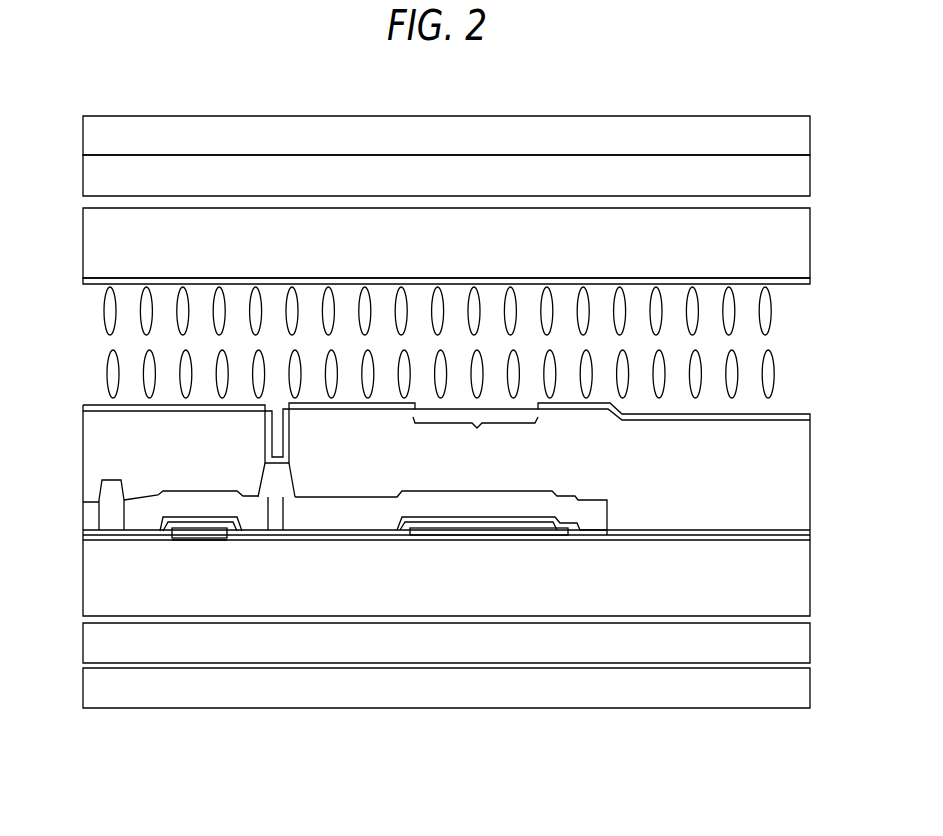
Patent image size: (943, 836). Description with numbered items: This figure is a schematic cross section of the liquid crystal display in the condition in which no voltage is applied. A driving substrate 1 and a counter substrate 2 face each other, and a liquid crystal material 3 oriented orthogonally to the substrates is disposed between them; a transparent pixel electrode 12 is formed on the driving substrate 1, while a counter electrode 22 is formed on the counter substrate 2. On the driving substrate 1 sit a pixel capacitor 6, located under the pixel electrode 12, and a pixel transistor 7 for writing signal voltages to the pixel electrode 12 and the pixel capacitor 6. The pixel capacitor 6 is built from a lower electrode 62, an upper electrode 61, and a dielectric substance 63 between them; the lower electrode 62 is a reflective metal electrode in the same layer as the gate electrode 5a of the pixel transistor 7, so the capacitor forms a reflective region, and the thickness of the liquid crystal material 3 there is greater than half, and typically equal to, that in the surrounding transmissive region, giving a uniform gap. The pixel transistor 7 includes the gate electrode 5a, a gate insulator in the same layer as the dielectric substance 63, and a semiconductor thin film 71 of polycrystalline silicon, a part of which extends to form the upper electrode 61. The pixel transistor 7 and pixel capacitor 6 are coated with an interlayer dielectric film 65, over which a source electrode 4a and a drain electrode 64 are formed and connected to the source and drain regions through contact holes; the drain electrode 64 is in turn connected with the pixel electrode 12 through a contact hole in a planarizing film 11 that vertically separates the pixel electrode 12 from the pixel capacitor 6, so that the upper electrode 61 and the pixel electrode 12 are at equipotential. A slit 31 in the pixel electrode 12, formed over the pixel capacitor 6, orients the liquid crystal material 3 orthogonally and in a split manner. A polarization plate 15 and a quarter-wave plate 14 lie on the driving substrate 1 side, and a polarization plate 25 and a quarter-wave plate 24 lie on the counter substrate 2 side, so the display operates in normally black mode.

The polarization plate 25 is at (793, 133).
The λ/4 plate 24 is at (793, 173).
The counter substrate 2 is at (795, 238).
The counter electrode 22 is at (788, 284).
The liquid crystal material 3 is at (797, 340).
The pixel electrode 12 is at (100, 406).
The planarizing film 11 is at (100, 445).
The slit 31 is at (477, 428).
The source electrode 4a is at (97, 480).
The semiconductor thin film 71 is at (93, 527).
The dielectric substance 63 is at (83, 533).
The gate electrode 5a is at (188, 533).
The pixel transistor 7 is at (207, 550).
The drain electrode 64 is at (293, 478).
The interlayer dielectric film 65 is at (373, 517).
The upper electrode 61 is at (490, 517).
The lower electrode 62 is at (508, 532).
The pixel capacitor 6 is at (537, 552).
The driving substrate 1 is at (795, 580).
The λ/4 plate 14 is at (795, 641).
The polarization plate 15 is at (795, 686).